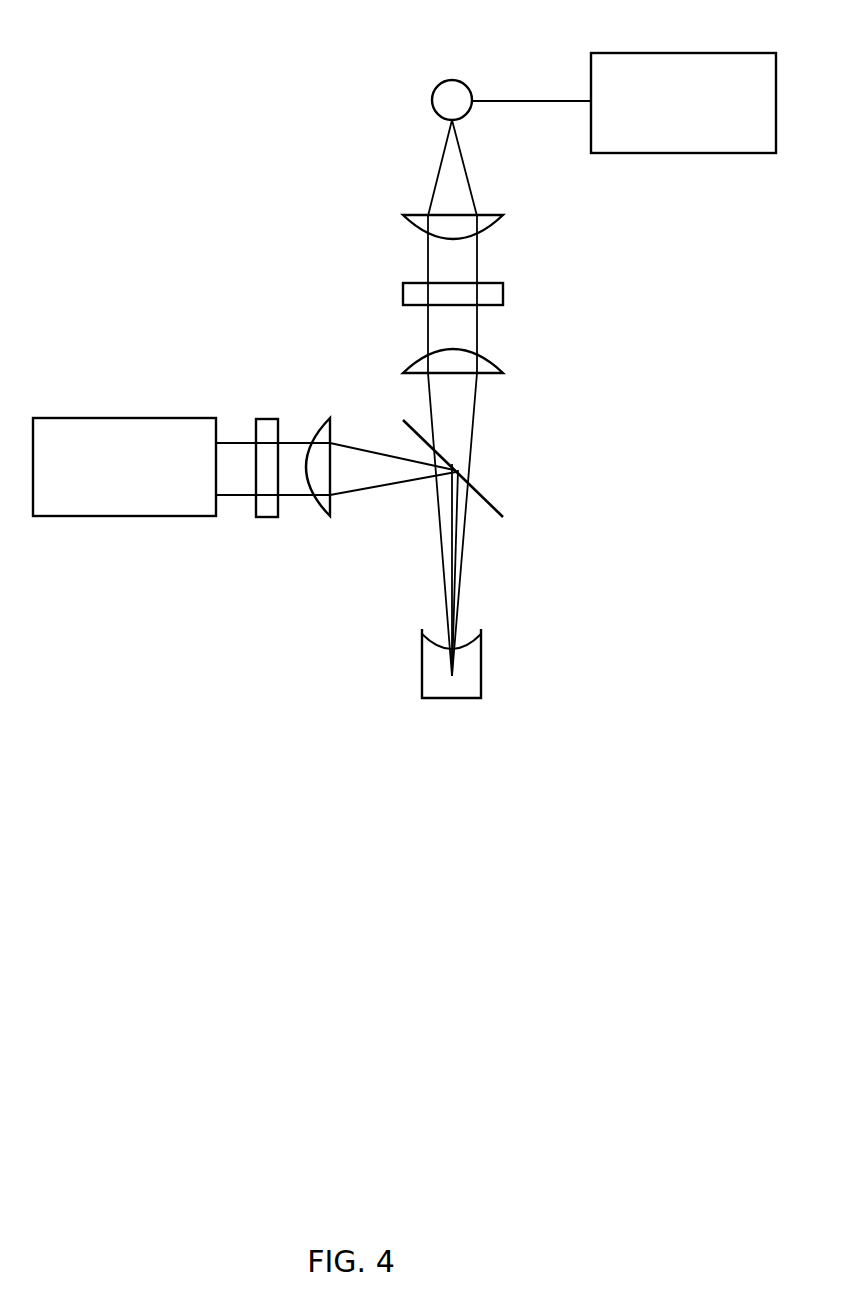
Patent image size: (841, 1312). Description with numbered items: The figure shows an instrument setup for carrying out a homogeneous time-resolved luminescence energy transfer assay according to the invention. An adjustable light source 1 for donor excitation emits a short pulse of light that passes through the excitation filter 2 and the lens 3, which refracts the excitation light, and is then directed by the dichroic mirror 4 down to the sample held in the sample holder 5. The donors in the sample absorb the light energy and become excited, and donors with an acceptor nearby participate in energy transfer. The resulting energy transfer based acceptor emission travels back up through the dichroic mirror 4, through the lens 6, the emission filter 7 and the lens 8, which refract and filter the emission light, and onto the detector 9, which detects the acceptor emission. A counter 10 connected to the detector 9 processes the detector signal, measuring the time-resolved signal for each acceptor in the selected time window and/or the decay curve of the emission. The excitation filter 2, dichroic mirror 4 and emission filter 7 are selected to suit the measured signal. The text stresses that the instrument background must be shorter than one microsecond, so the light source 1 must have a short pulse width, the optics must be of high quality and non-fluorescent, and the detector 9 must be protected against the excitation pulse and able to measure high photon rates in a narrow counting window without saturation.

The adjustable light source 1 is at (124, 449).
The excitation filter 2 is at (267, 449).
The lens 3 is at (323, 449).
The dichroic mirror 4 is at (458, 468).
The sample holder 5 is at (467, 663).
The lens 6 is at (469, 369).
The emission filter 7 is at (469, 298).
The lens 8 is at (469, 225).
The detector 9 is at (463, 90).
The counter 10 is at (683, 82).